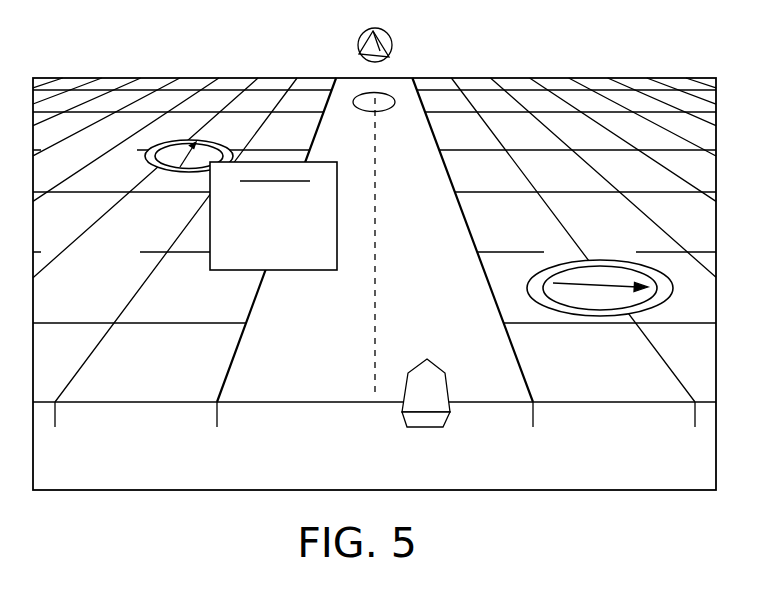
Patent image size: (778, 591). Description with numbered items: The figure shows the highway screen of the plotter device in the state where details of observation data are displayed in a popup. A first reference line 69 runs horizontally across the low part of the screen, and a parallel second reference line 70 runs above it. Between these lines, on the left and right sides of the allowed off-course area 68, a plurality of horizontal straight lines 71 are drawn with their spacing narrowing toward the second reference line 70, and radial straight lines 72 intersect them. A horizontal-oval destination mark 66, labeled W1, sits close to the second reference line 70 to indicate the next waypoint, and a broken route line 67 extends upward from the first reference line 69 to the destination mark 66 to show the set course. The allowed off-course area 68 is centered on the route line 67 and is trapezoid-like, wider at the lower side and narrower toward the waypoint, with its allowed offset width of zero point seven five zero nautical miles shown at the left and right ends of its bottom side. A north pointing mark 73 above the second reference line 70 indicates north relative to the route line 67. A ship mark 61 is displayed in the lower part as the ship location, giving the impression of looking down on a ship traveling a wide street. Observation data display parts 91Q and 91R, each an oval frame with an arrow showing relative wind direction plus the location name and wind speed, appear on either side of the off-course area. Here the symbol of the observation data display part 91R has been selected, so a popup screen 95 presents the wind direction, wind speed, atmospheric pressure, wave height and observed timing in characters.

The ship mark 61 is at (445, 374).
The destination mark 66 is at (389, 93).
The route line 67 is at (378, 217).
The allowed off-course area 68 is at (221, 376).
The first reference line 69 is at (638, 403).
The second reference line 70 is at (600, 78).
The horizontal straight lines 71 is at (708, 192).
The radial straight lines 72 is at (697, 190).
The north pointing mark 73 is at (358, 48).
The observation data display part 91Q is at (515, 281).
The observation data display part 91R is at (152, 139).
The popup screen 95 is at (296, 270).